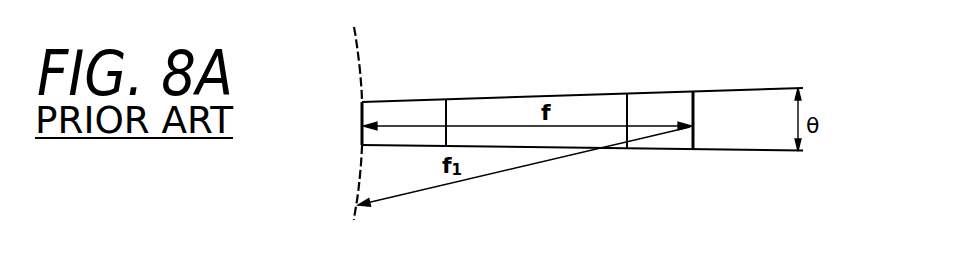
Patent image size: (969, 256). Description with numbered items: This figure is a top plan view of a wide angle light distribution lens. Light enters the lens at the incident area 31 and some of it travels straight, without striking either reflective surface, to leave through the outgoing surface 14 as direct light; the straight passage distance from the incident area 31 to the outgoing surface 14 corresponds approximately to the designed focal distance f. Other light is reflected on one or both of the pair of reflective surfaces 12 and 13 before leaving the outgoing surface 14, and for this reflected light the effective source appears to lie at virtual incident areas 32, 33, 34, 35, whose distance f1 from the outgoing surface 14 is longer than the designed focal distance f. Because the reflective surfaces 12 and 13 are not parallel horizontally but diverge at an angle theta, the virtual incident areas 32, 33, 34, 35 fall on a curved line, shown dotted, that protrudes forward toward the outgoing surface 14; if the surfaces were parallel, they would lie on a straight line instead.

The reflective surface 12 is at (618, 150).
The reflective surface 13 is at (595, 96).
The outgoing surface 14 is at (695, 118).
The incident area 31 is at (362, 117).
The virtual incident area 32 is at (357, 150).
The virtual incident area 33 is at (357, 75).
The virtual incident area 34 is at (355, 190).
The virtual incident area 35 is at (355, 30).